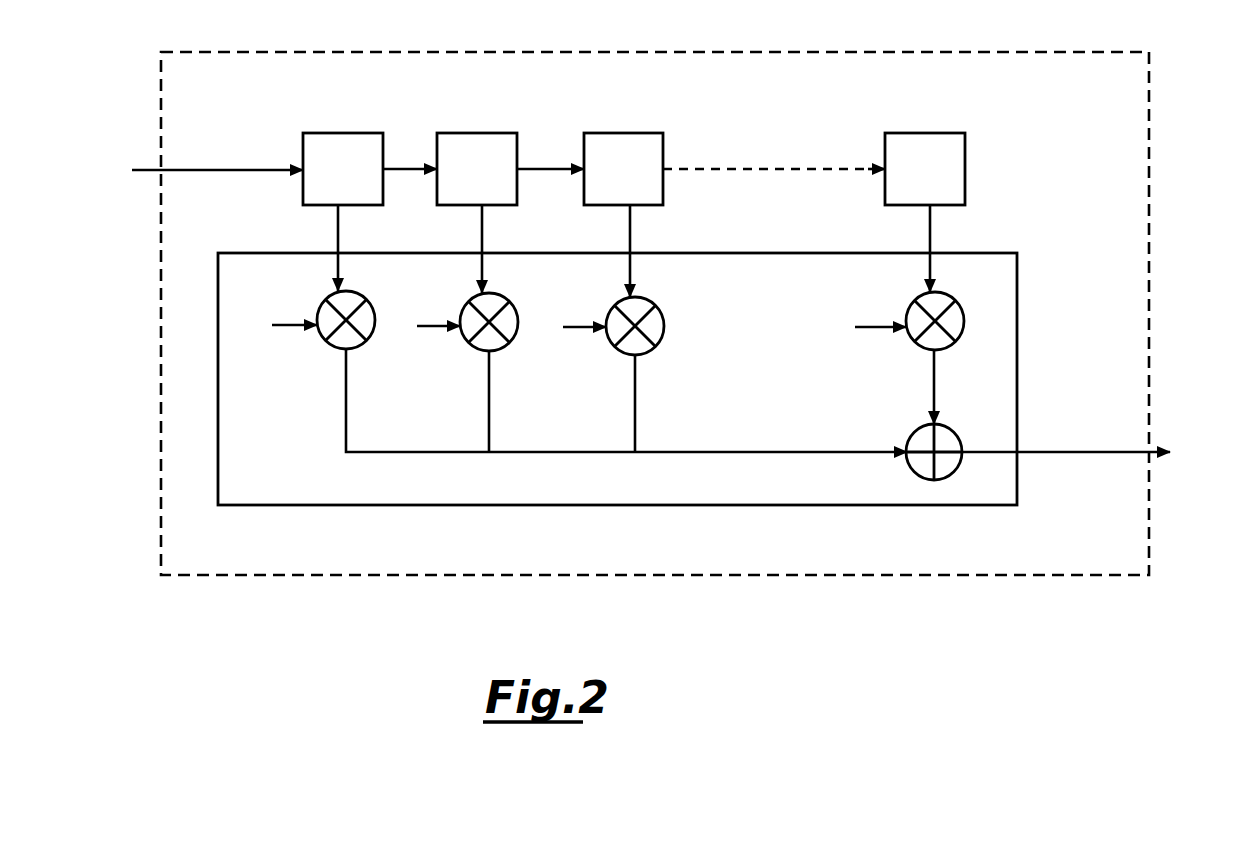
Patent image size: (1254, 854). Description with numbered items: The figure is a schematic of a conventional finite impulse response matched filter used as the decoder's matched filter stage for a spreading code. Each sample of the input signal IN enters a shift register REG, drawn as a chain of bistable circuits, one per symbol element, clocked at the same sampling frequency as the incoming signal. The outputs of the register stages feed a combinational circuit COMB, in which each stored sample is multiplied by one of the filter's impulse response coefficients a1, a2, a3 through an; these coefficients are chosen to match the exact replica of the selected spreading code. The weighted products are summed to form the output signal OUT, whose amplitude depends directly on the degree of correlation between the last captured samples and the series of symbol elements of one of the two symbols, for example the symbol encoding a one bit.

The shift register REG is at (643, 109).
The combinational circuit COMB is at (674, 355).
The input signal IN is at (198, 184).
The output signal OUT is at (1100, 464).
The impulse response coefficient a1 is at (285, 325).
The impulse response coefficient a2 is at (428, 325).
The impulse response coefficient a3 is at (574, 327).
The impulse response coefficient an is at (864, 327).